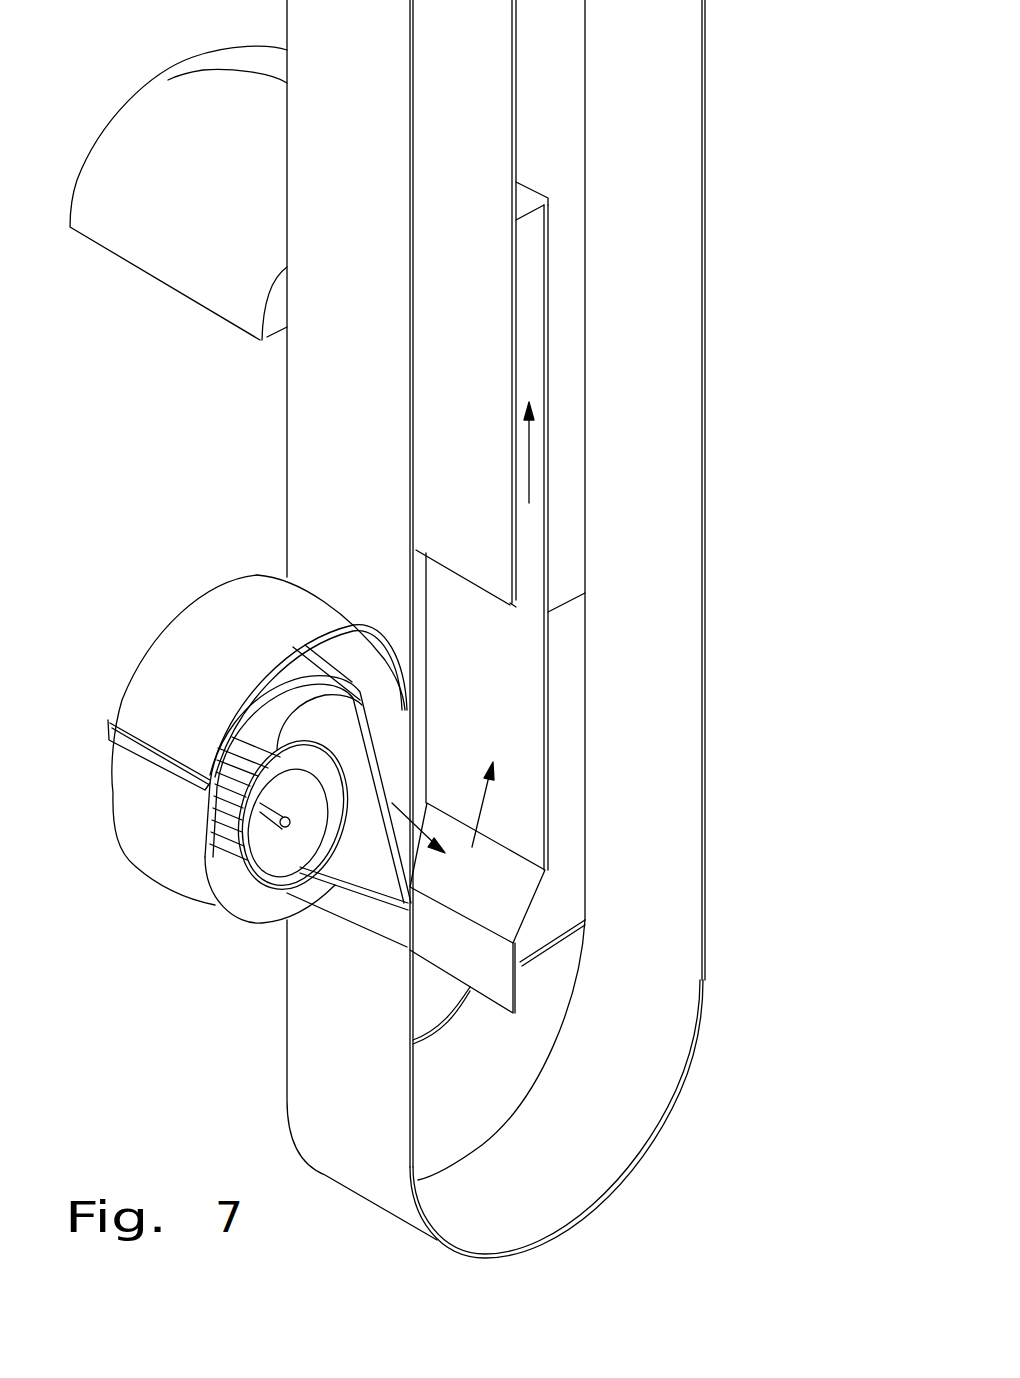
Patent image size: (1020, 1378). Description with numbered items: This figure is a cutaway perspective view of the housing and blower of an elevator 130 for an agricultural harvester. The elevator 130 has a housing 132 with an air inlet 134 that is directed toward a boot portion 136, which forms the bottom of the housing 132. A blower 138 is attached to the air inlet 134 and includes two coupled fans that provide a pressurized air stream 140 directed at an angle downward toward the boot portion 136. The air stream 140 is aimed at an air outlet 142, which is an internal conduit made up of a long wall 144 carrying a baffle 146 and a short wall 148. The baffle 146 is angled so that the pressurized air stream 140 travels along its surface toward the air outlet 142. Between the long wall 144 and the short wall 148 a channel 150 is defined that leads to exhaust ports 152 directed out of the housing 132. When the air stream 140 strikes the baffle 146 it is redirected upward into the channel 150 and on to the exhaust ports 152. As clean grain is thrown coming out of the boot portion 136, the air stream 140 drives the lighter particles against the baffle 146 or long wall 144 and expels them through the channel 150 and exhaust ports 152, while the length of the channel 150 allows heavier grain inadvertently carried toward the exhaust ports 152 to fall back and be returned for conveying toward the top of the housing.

The elevator 130 is at (738, 110).
The housing 132 is at (305, 400).
The air inlet 134 is at (377, 773).
The boot portion 136 is at (690, 1070).
The blower 138 is at (180, 893).
The air stream 140 is at (529, 450).
The air outlet 142 is at (508, 618).
The long wall 144 is at (550, 565).
The baffle 146 is at (493, 885).
The short wall 148 is at (510, 306).
The channel 150 is at (528, 335).
The exhaust ports 152 is at (152, 262).